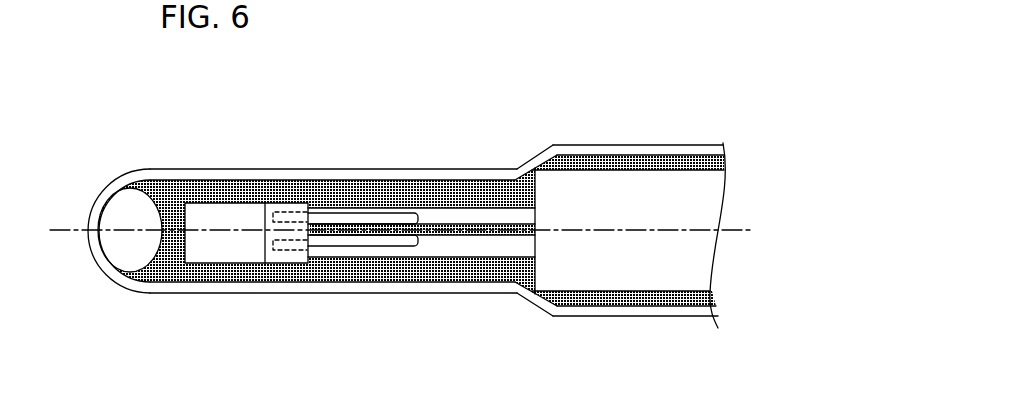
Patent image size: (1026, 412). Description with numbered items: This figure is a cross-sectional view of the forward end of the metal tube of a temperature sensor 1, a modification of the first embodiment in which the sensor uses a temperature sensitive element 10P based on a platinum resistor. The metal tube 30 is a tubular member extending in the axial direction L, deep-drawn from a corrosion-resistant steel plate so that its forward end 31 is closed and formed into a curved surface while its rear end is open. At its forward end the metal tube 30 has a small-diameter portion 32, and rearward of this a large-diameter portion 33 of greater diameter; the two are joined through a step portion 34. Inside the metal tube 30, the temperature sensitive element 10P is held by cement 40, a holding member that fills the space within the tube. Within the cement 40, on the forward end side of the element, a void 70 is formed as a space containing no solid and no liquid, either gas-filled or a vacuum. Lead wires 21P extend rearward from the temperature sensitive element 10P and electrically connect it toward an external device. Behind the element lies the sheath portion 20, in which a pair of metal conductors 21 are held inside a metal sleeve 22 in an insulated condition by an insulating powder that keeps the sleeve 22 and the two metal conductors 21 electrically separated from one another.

The temperature sensor 1 is at (109, 100).
The axial direction L is at (72, 230).
The metal tube 30 is at (579, 96).
The forward end 31 is at (96, 268).
The small-diameter portion 32 is at (471, 169).
The step portion 34 is at (534, 156).
The large-diameter portion 33 is at (627, 145).
The sheath portion 20 is at (618, 355).
The metal conductors 21 is at (495, 257).
The sleeve 22 is at (592, 291).
The cement 40 is at (396, 190).
The temperature sensitive element 10P is at (222, 272).
The lead wires 21P is at (321, 213).
The void 70 is at (122, 196).